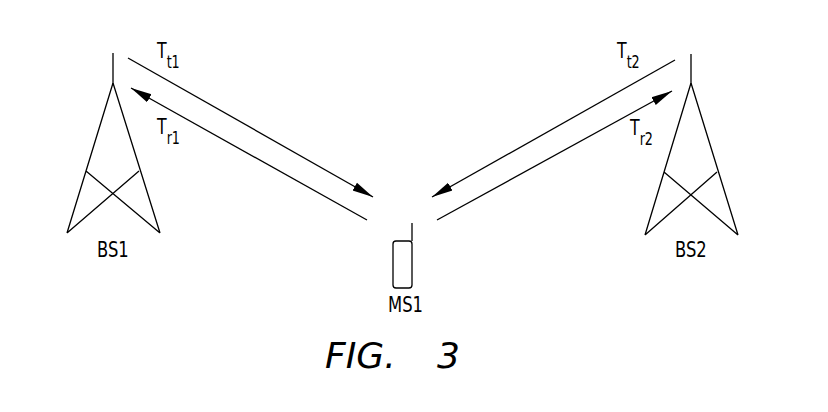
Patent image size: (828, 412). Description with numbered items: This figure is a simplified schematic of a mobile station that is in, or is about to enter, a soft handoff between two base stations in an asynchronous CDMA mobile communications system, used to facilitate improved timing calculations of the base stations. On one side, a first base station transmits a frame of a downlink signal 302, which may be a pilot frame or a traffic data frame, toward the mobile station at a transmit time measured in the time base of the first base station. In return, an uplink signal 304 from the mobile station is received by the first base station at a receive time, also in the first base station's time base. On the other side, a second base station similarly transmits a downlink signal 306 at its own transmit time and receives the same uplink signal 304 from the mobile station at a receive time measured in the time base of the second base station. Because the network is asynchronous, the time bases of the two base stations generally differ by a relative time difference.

The downlink signal 302 is at (238, 118).
The uplink signal 304 is at (283, 173).
The downlink signal 306 is at (537, 137).